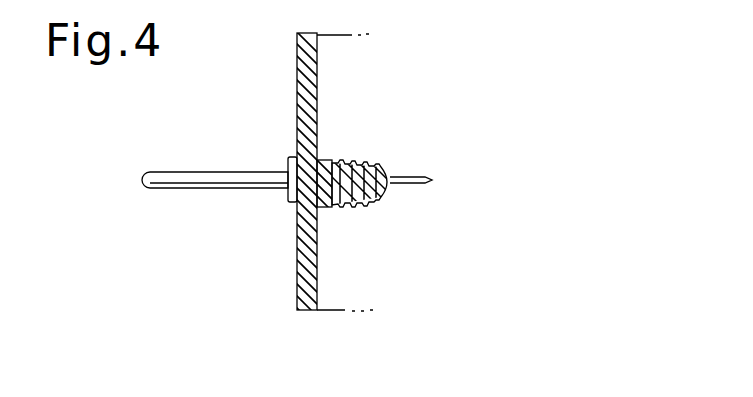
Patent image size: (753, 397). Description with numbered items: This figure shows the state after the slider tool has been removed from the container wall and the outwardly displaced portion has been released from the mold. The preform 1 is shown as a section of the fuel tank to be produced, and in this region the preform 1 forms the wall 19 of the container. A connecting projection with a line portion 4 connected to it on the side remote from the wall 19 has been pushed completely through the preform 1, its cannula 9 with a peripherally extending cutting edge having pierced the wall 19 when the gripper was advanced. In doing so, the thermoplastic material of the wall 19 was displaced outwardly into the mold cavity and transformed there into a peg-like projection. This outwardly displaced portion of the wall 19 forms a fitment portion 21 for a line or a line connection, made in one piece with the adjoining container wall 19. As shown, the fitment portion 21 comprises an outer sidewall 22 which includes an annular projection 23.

The preform 1 is at (295, 78).
The line portion 4 is at (190, 188).
The cannula 9 is at (418, 176).
The wall 19 is at (297, 290).
The fitment portion 21 is at (409, 177).
The outer sidewall 22 is at (377, 197).
The annular projection 23 is at (345, 198).